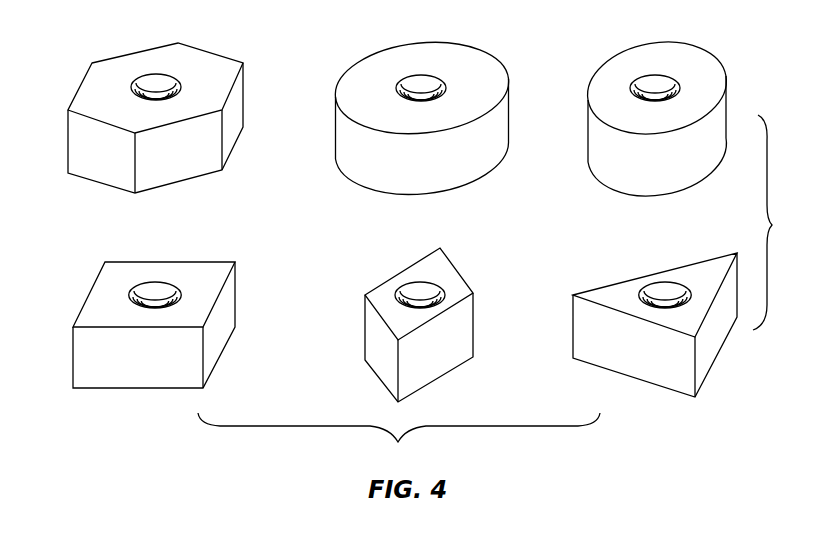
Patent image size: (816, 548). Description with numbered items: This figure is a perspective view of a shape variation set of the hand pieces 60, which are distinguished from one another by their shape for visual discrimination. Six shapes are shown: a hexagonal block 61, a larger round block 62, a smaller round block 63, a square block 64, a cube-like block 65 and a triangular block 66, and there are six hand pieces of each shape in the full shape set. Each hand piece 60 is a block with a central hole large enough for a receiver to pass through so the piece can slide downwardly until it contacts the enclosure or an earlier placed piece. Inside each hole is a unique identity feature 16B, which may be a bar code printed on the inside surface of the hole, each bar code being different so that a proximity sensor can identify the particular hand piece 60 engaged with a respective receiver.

The hand pieces 60 is at (124, 434).
The hexagonal nut 61 is at (125, 63).
The large round nut 62 is at (393, 63).
The small round nut 63 is at (622, 63).
The square nut 64 is at (202, 270).
The cube nut 65 is at (437, 270).
The triangular nut 66 is at (697, 270).
The identity feature 16B is at (182, 73).